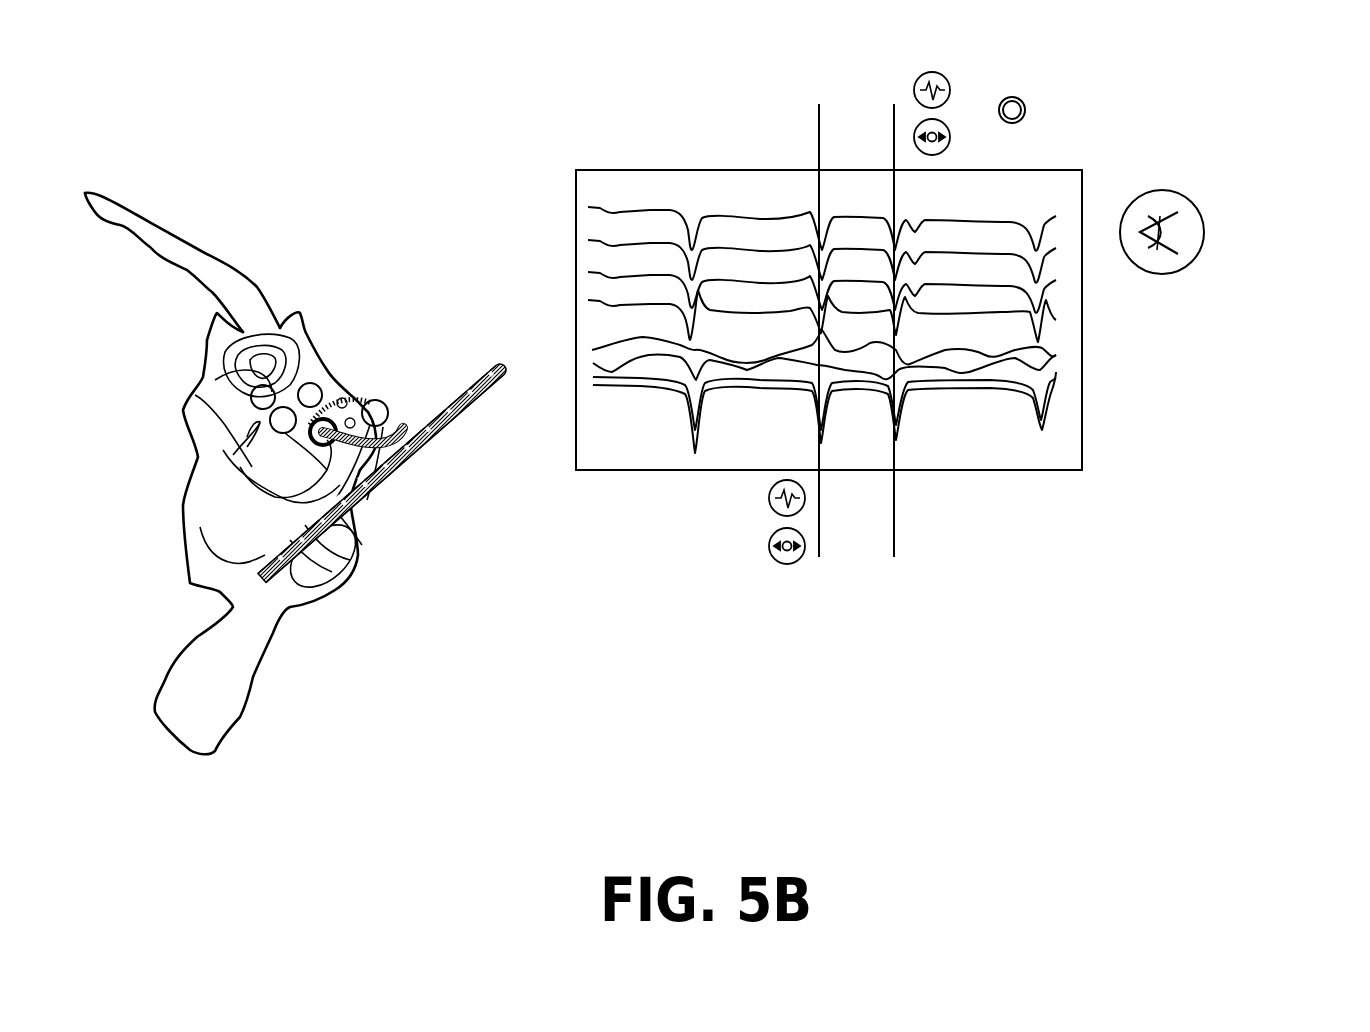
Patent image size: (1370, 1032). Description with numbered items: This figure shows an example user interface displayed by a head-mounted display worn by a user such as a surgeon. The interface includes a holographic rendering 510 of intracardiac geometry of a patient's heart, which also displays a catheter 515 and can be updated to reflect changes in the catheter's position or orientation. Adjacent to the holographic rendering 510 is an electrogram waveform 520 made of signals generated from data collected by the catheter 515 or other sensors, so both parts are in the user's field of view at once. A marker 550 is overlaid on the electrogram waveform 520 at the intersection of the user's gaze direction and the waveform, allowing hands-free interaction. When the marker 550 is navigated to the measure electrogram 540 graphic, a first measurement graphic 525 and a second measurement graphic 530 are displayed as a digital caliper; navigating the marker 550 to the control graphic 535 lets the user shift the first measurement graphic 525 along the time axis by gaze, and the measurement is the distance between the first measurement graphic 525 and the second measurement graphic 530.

The holographic rendering 510 is at (222, 260).
The catheter 515 is at (474, 402).
The electrogram waveform 520 is at (641, 170).
The first measurement graphic 525 is at (819, 545).
The second measurement graphic 530 is at (894, 510).
The control graphic 535 is at (783, 565).
The measure electrogram graphic 540 is at (1178, 272).
The marker 550 is at (1017, 95).